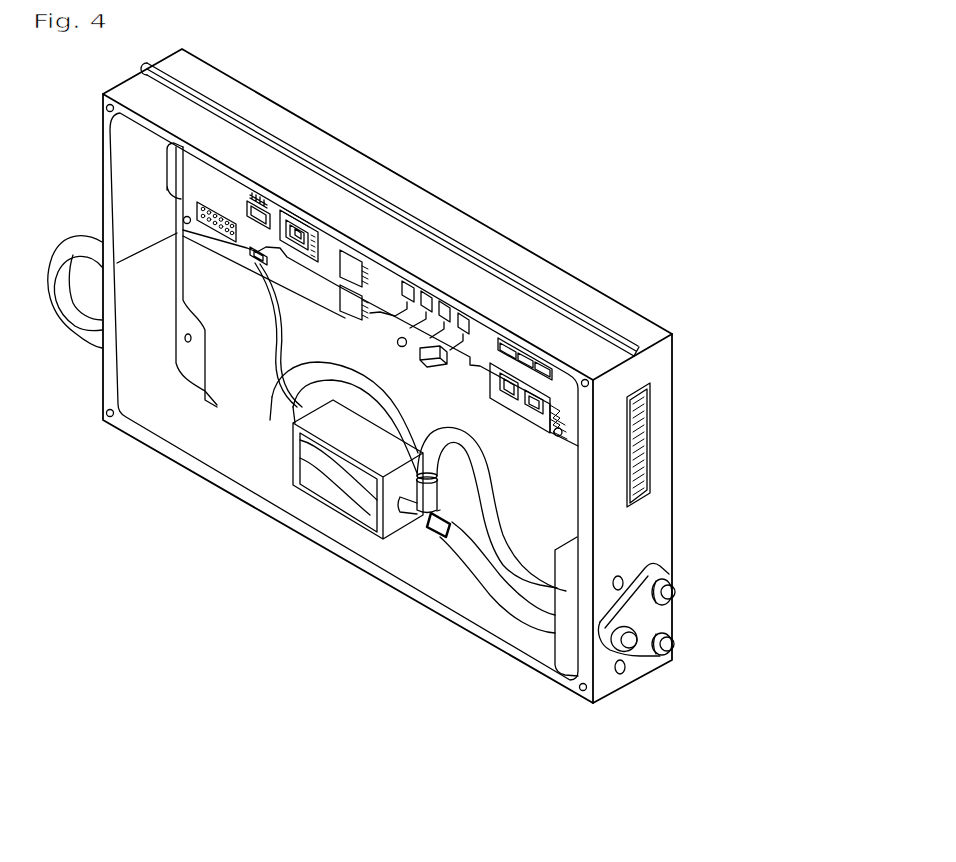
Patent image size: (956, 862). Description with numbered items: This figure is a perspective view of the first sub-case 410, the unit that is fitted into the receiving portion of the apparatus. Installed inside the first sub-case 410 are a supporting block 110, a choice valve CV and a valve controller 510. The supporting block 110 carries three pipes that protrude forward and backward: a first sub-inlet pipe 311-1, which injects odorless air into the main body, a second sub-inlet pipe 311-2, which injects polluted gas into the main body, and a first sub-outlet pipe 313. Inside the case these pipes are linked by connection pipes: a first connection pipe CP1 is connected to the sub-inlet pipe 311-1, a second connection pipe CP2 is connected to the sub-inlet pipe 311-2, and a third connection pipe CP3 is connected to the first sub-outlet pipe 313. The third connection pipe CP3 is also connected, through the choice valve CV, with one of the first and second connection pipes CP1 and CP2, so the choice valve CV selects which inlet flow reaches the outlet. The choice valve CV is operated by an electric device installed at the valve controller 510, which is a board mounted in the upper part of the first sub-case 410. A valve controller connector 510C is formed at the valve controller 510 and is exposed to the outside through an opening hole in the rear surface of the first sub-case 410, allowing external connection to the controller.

The supporting block 110 is at (565, 633).
The first sub-case 410 is at (220, 446).
The valve controller 510 is at (333, 247).
The valve controller connector 510C is at (648, 393).
The choice valve CV is at (342, 477).
The first connection pipe CP1 is at (463, 537).
The second connection pipe CP2 is at (497, 513).
The third connection pipe CP3 is at (497, 553).
The 1-1st sub-inlet pipe 311-1 is at (677, 645).
The 1-2nd sub-inlet pipe 311-2 is at (677, 592).
The first sub-outlet pipe 313 is at (632, 648).